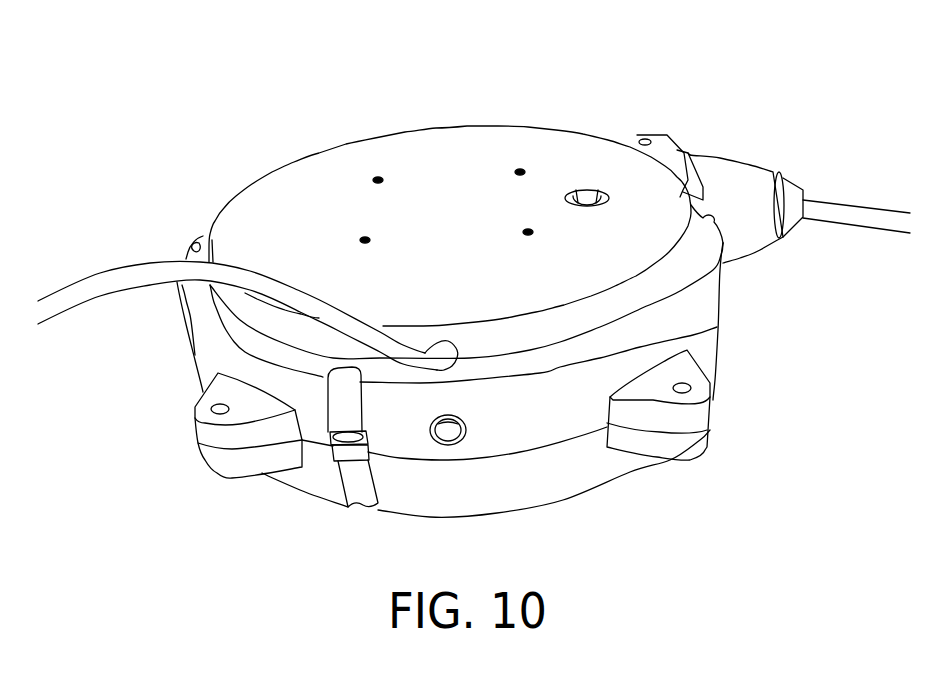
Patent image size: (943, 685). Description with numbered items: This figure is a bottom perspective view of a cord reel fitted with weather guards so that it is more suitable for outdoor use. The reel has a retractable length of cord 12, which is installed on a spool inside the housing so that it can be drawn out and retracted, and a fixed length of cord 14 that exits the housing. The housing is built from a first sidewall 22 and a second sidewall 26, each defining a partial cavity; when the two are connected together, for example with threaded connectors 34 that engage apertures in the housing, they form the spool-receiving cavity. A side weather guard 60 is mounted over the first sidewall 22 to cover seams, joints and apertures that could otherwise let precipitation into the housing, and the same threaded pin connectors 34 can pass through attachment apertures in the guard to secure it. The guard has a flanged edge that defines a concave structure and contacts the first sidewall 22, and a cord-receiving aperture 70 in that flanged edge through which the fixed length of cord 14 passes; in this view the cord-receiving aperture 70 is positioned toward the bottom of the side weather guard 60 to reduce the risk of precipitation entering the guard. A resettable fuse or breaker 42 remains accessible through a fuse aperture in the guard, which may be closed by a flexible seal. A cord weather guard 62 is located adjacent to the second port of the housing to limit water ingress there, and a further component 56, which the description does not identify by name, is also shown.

The retractable length of cord 12 is at (887, 207).
The fixed length of cord 14 is at (120, 262).
The first sidewall 22 is at (518, 487).
The second sidewall 26 is at (553, 410).
The threaded connectors 34 is at (363, 237).
The resettable fuse or breaker 42 is at (585, 188).
The connector nut 56 is at (792, 188).
The side weather guard 60 is at (412, 158).
The cord weather guard 62 is at (720, 180).
The cord-receiving aperture 70 is at (447, 343).